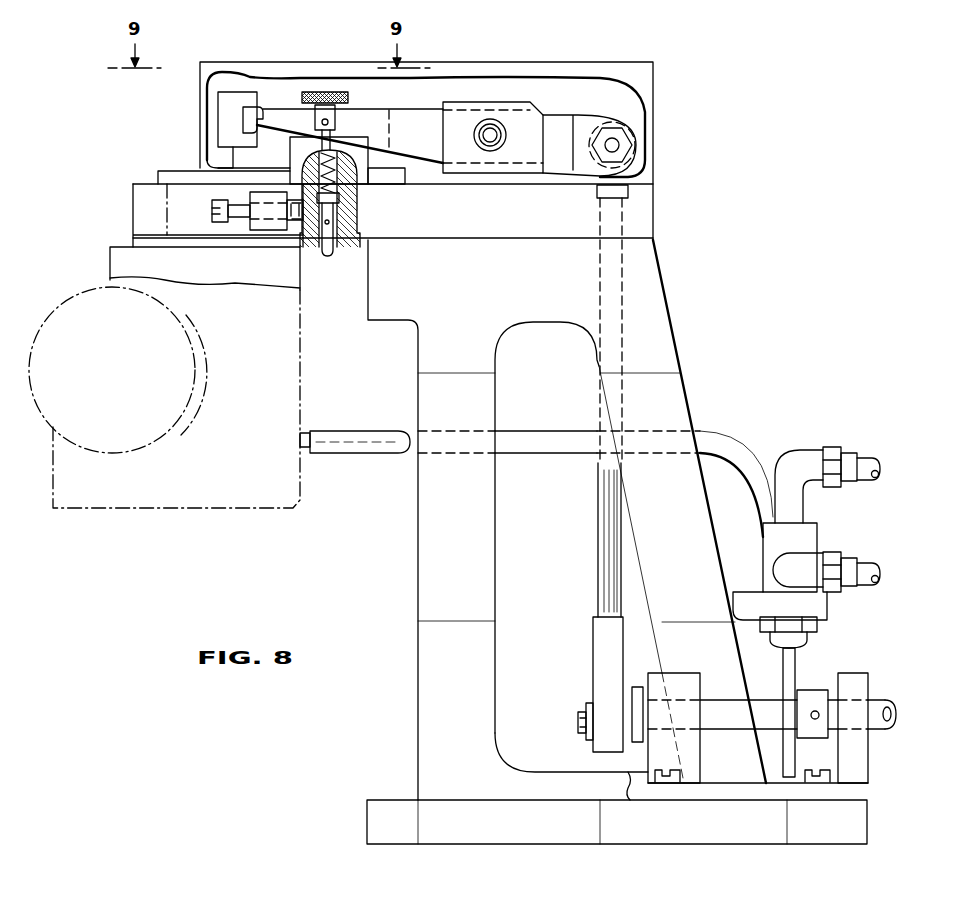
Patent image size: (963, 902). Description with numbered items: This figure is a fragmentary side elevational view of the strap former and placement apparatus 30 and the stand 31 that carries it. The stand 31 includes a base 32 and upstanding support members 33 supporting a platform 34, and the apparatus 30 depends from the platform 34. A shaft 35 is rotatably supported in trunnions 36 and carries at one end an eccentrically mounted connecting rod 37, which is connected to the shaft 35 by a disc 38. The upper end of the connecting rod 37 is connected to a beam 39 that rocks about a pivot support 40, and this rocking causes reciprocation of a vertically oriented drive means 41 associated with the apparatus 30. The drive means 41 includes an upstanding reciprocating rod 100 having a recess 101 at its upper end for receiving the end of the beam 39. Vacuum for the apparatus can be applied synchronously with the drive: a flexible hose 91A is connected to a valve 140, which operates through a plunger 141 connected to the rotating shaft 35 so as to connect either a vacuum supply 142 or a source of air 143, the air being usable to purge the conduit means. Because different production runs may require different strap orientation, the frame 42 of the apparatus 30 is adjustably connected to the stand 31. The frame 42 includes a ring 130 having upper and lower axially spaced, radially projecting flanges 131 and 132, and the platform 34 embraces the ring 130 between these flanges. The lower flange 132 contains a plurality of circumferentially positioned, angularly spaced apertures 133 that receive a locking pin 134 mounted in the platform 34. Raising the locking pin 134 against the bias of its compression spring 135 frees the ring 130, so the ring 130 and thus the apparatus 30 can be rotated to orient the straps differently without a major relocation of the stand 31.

The strap former and placement apparatus 30 is at (74, 254).
The stand 31 is at (704, 380).
The base 32 is at (466, 833).
The upstanding support members 33 is at (428, 553).
The platform 34 is at (645, 218).
The shaft 35 is at (870, 727).
The trunnions 36 is at (693, 747).
The connecting rod 37 is at (595, 638).
The disc 38 is at (637, 687).
The beam 39 is at (398, 117).
The pivot support 40 is at (497, 140).
The drive means 41 is at (252, 68).
The frame 42 is at (300, 280).
The flexible hose 91A is at (382, 440).
The reciprocating rod 100 is at (223, 117).
The recess 101 is at (263, 113).
The ring 130 is at (135, 186).
The upper flange 131 is at (178, 173).
The lower flange 132 is at (135, 243).
The apertures 133 is at (333, 227).
The locking pin 134 is at (325, 89).
The compression spring 135 is at (340, 192).
The valve 140 is at (808, 542).
The plunger 141 is at (793, 663).
The vacuum supply 142 is at (863, 460).
The source of air 143 is at (866, 563).